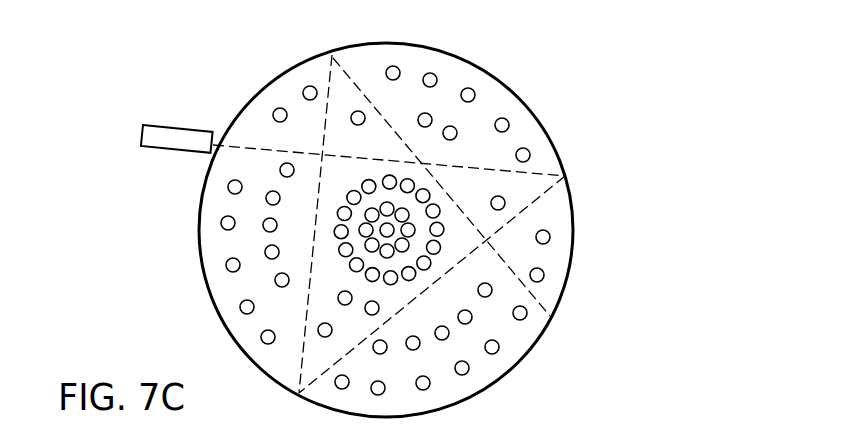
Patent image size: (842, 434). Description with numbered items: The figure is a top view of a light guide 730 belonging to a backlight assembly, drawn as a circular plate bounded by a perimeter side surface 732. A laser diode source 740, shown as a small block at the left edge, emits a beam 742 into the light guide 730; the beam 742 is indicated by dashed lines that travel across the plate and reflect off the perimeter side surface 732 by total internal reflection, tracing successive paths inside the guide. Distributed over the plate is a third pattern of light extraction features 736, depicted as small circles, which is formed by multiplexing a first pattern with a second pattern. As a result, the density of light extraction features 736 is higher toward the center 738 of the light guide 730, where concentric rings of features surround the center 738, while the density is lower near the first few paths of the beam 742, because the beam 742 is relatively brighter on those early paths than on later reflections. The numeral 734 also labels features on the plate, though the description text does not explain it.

The showerhead / gas distribution plate assembly 730 is at (672, 83).
The plate body 732 is at (512, 91).
The gas holes 734 is at (457, 75).
The gas holes 736 is at (221, 223).
The central hole pattern 738 is at (387, 230).
The gas inlet / connector 740 is at (162, 127).
The sector boundary lines 742 is at (243, 145).